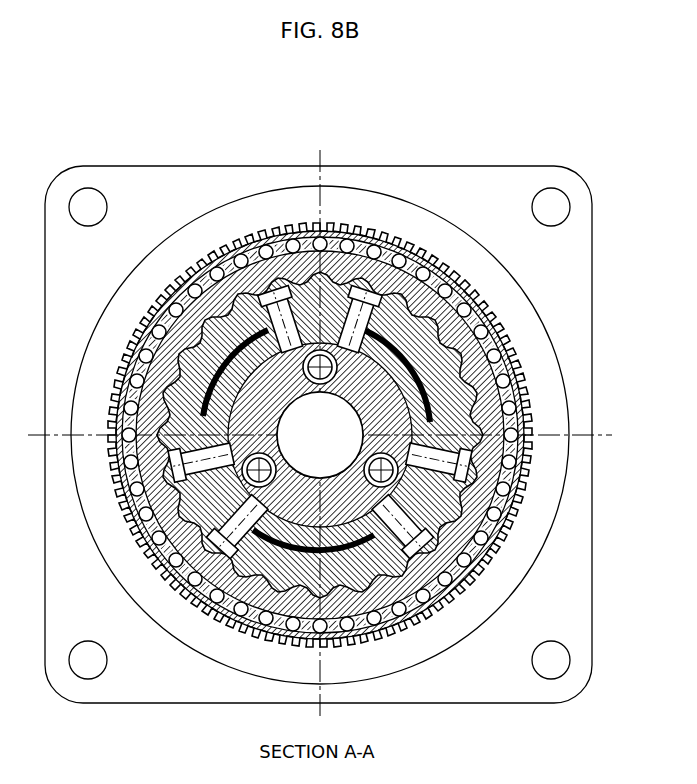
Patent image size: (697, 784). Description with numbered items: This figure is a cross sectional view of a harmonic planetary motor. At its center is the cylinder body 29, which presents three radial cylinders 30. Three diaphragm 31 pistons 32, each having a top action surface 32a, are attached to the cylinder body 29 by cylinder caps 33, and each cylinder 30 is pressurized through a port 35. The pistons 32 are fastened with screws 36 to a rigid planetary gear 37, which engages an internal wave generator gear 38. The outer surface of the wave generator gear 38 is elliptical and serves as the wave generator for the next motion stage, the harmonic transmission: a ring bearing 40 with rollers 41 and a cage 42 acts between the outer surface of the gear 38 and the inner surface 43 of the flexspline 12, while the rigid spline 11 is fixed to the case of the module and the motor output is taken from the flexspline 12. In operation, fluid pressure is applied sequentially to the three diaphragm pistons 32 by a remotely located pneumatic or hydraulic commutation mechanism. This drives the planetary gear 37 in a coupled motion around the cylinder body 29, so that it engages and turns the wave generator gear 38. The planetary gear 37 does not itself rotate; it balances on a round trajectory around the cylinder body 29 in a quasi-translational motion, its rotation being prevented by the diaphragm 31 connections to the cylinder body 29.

The rigid spline 11 is at (173, 262).
The flexspline 12 is at (222, 253).
The cylinder body 29 is at (467, 282).
The radial cylinder 30 is at (412, 240).
The diaphragm 31 is at (430, 253).
The piston 32 is at (330, 290).
The top action surface 32a is at (360, 227).
The cylinder cap 33 is at (452, 275).
The port 35 is at (322, 232).
The screw 36 is at (380, 233).
The planetary gear 37 is at (309, 232).
The wave generator gear 38 is at (273, 233).
The ring bearing 40 is at (243, 243).
The roller 41 is at (277, 225).
The cage 42 is at (262, 231).
The inner surface 43 is at (192, 262).